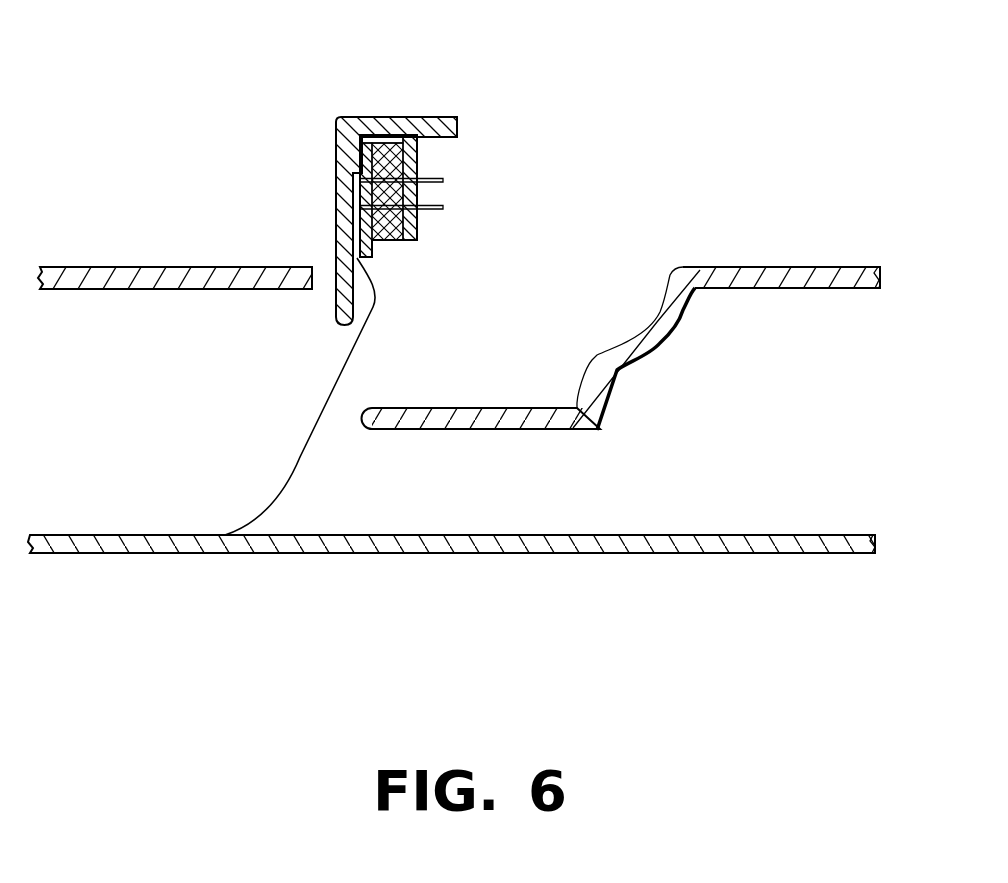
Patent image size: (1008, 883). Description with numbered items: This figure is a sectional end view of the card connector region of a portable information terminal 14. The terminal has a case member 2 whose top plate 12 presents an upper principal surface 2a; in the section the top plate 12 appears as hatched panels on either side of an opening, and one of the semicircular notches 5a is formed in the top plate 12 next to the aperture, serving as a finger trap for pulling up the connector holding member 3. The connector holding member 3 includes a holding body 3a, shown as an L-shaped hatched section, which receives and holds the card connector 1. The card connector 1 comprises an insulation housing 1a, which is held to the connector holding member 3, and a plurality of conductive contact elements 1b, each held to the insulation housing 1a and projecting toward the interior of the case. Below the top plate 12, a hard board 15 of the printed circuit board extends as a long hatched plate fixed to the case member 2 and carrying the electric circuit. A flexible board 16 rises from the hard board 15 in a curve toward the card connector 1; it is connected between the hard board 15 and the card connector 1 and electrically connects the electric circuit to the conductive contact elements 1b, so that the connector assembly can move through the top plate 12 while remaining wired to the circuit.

The card connector 1 is at (452, 185).
The insulation housing 1a is at (397, 243).
The conductive contact elements 1b is at (430, 207).
The case member 2 is at (80, 267).
The principal surface 2a is at (275, 267).
The connector holding member 3 is at (335, 182).
The holding body 3a is at (390, 117).
The semicircular notch 5a is at (652, 315).
The top plate 12 is at (212, 277).
The portable information terminal 14 is at (493, 113).
The hard board 15 is at (573, 535).
The flexible board 16 is at (300, 457).